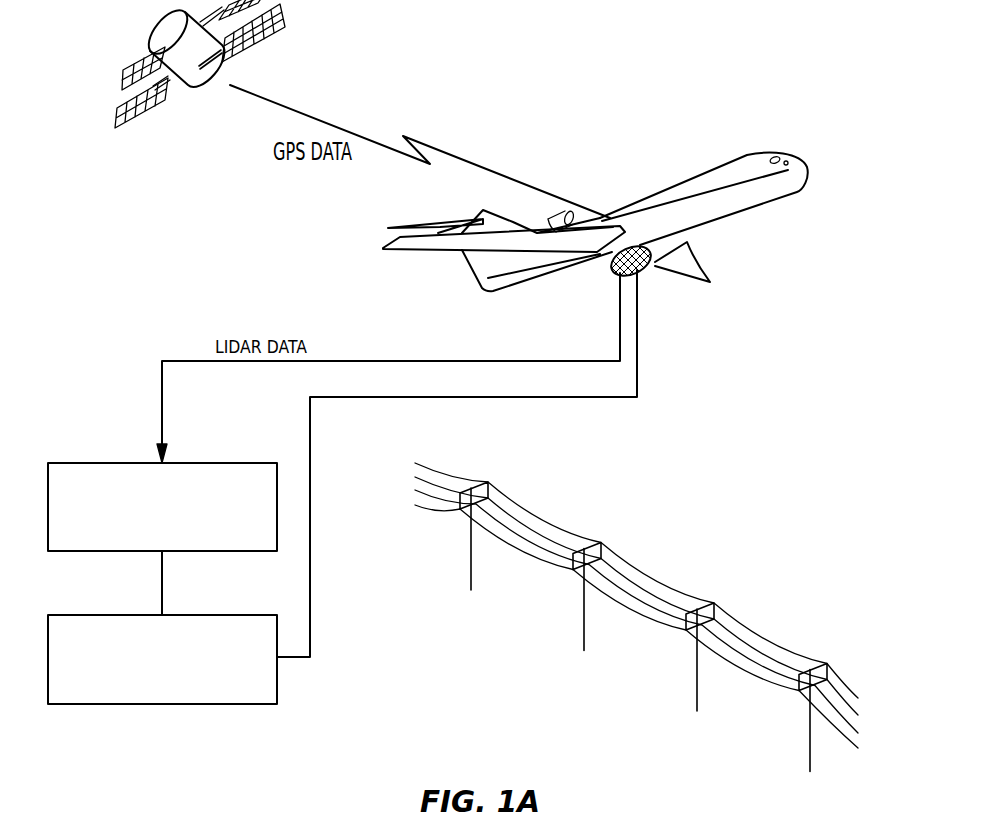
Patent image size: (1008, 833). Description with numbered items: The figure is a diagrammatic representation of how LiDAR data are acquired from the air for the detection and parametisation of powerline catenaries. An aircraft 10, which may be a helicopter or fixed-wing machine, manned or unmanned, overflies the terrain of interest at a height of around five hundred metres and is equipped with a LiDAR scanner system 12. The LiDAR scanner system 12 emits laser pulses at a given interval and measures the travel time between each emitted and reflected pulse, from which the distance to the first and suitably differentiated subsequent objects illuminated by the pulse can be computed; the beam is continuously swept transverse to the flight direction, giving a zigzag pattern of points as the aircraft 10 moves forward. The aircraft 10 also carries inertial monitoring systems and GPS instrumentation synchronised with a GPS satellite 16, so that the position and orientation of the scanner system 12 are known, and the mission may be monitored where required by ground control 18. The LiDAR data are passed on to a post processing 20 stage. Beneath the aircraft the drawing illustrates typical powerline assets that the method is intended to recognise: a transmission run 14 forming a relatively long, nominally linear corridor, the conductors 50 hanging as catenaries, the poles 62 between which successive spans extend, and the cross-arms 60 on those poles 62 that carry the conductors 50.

The aircraft 10 is at (815, 116).
The LiDAR scanner system 12 is at (643, 273).
The transmission run 14 is at (680, 545).
The GPS satellite 16 is at (162, 32).
The ground control 18 is at (117, 705).
The post processing unit 20 is at (118, 462).
The conductors 50 is at (648, 633).
The cross-arms 60 is at (707, 603).
The poles 62 is at (699, 679).